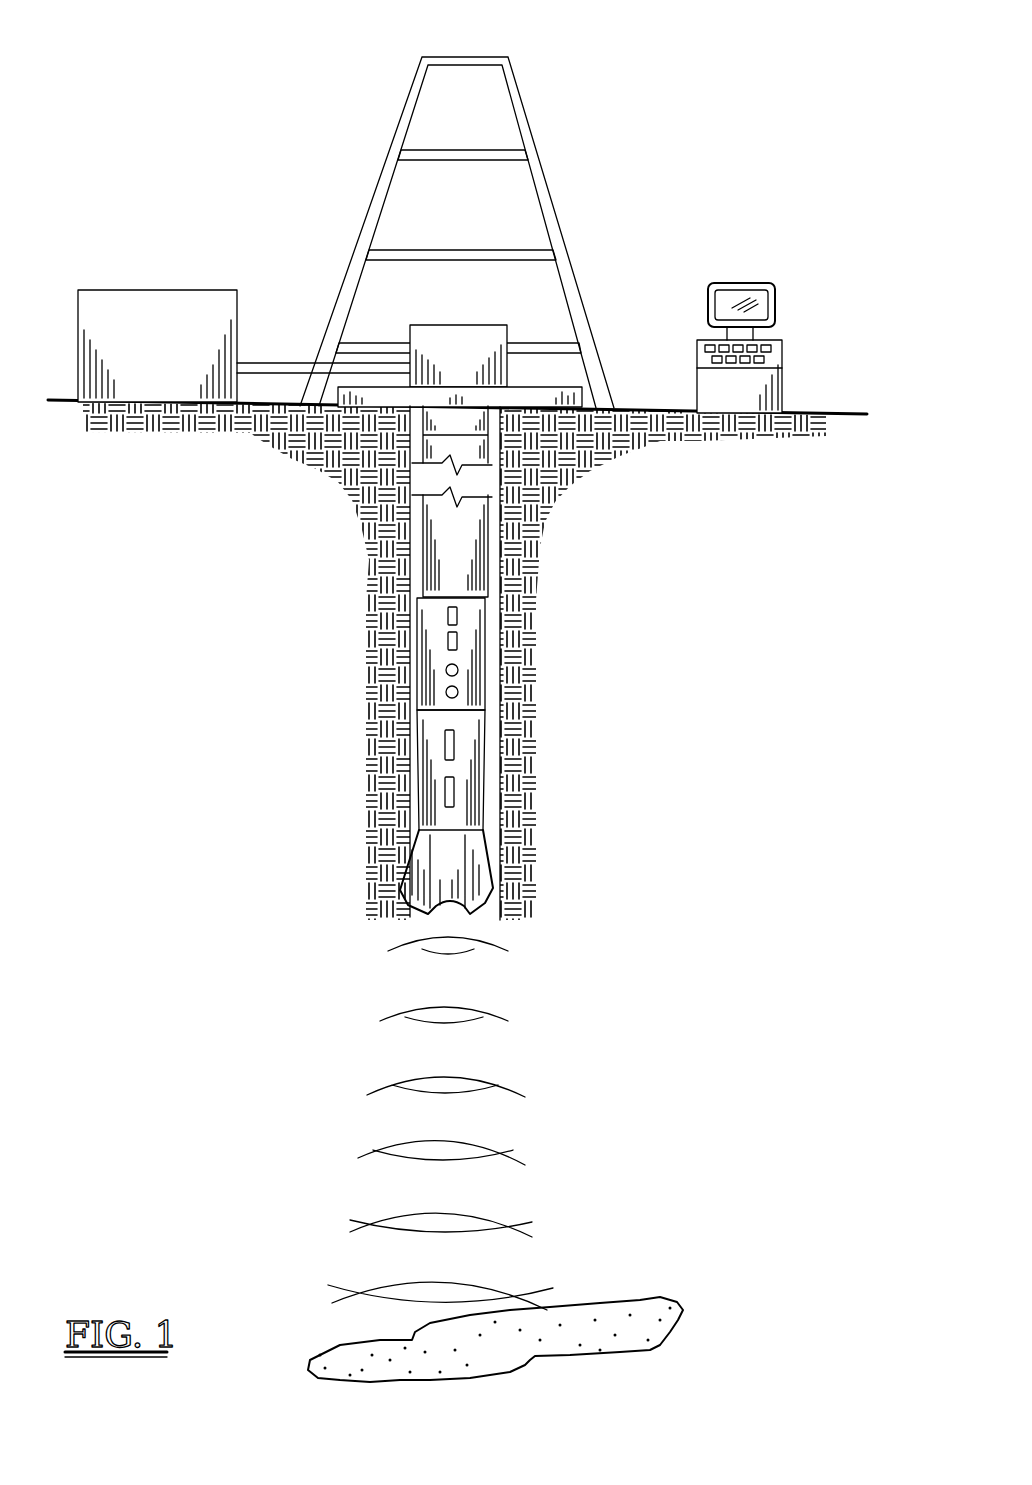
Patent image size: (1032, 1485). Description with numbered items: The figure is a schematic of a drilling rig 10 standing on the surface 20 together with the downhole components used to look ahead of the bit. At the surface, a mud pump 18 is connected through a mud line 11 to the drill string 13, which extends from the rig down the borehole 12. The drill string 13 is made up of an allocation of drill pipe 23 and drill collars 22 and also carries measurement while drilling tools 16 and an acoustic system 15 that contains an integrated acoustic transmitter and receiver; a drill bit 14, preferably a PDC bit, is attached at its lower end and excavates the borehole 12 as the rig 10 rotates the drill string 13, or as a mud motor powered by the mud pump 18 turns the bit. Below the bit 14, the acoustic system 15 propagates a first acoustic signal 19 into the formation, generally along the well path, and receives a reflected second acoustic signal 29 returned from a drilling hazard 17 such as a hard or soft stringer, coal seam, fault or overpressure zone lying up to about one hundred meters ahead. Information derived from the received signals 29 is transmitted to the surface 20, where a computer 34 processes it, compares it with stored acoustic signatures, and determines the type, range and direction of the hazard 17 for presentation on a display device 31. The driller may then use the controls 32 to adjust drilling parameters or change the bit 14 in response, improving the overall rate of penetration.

The drilling rig 10 is at (513, 95).
The mud line 11 is at (307, 363).
The borehole 12 is at (487, 564).
The drill string 13 is at (442, 714).
The drill bit 14 is at (423, 888).
The acoustic system 15 is at (467, 783).
The measurement while drilling tools 16 is at (462, 652).
The drilling hazard 17 is at (511, 1358).
The mud pump 18 is at (163, 290).
The first acoustic signal 19 is at (447, 1160).
The surface 20 is at (813, 413).
The drill collars 22 is at (437, 557).
The drill pipe 23 is at (472, 445).
The second acoustic signal 29 is at (400, 1142).
The display device 31 is at (775, 300).
The controls 32 is at (777, 355).
The computer 34 is at (715, 388).